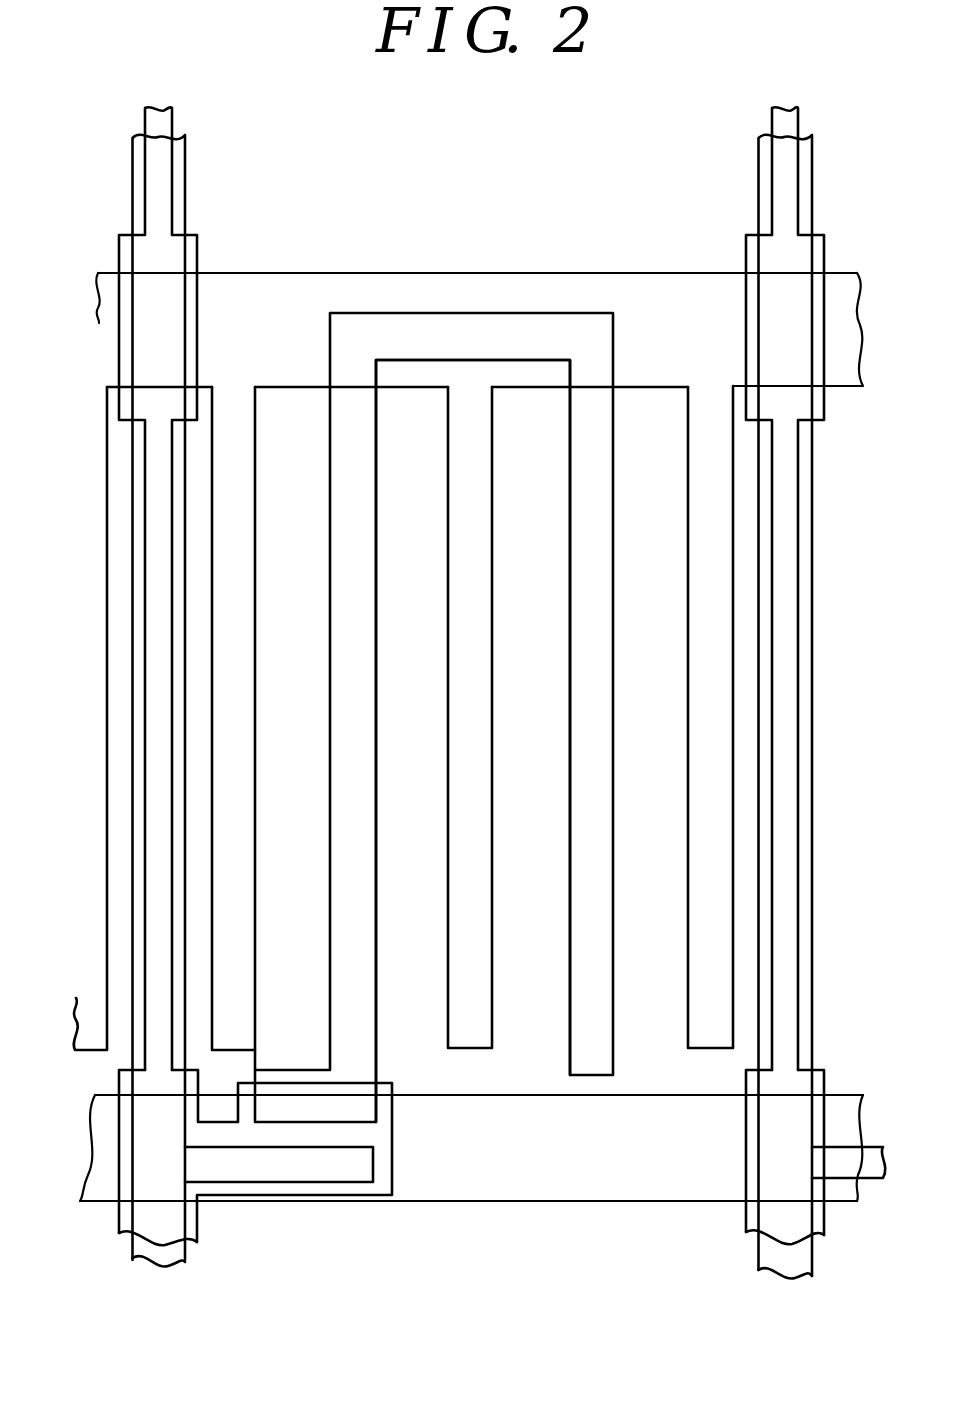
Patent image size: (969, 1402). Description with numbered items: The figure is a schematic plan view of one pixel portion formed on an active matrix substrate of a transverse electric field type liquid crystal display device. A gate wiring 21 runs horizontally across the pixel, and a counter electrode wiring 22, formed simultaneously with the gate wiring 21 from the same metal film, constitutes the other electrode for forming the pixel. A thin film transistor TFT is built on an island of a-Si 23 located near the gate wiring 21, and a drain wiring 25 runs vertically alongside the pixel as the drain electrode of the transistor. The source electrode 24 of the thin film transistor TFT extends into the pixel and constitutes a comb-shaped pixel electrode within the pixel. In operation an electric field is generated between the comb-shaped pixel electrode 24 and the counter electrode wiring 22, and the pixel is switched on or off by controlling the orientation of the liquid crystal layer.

The gate wiring 21 is at (445, 1187).
The counter electrode wiring 22 is at (283, 283).
The island of a-Si 23 is at (382, 1184).
The source electrode 24 is at (365, 1037).
The drain wiring 25 is at (162, 1223).
The thin film transistor TFT is at (268, 1215).